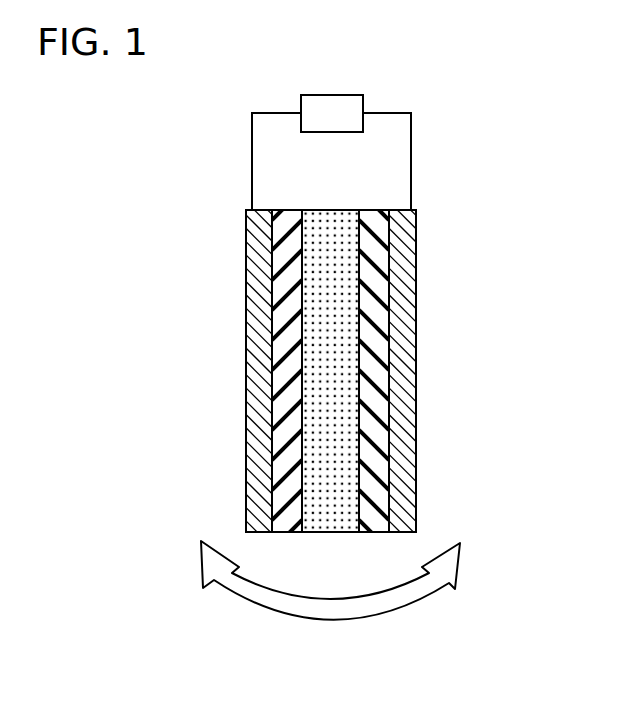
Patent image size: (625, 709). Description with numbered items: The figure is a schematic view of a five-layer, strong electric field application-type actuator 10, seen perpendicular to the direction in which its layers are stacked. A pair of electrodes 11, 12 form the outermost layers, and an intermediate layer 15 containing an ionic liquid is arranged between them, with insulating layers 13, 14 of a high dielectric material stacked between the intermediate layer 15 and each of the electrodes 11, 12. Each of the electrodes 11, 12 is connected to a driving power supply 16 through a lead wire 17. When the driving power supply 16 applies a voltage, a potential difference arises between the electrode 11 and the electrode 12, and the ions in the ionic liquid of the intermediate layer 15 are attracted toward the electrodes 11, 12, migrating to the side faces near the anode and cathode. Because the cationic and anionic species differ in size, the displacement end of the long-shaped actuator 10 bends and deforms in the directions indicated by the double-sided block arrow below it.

The actuator 10 is at (430, 75).
The electrode 11 is at (257, 255).
The electrode 12 is at (400, 260).
The insulating layer 13 is at (287, 348).
The insulating layer 14 is at (375, 347).
The intermediate layer 15 is at (325, 438).
The driving power supply 16 is at (332, 95).
The lead wire 17 is at (411, 146).